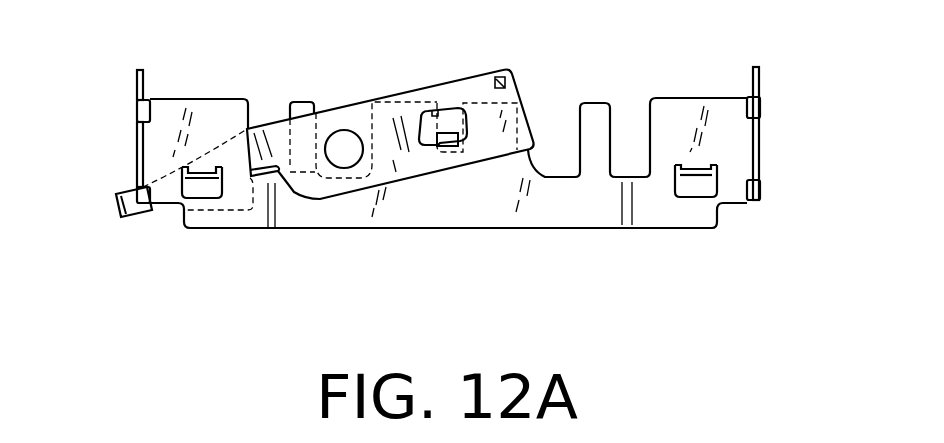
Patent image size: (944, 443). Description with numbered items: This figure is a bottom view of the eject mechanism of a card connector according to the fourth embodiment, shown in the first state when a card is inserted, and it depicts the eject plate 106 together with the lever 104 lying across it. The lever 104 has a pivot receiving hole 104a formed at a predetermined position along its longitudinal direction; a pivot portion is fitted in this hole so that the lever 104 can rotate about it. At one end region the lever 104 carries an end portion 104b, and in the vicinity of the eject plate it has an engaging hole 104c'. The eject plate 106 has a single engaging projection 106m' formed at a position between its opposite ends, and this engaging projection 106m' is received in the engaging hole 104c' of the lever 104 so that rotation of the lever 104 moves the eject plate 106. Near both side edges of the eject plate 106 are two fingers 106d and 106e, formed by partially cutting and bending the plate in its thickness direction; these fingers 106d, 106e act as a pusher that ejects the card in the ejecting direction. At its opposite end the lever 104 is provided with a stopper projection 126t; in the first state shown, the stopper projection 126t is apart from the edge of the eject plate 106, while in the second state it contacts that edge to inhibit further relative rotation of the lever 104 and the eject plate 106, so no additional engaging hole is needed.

The lever 104 is at (360, 103).
The pivot receiving hole 104a is at (337, 147).
The tab 104b is at (118, 206).
The engaging hole 104c' is at (437, 84).
The eject plate 106 is at (545, 230).
The finger 106d is at (203, 180).
The finger 106e is at (693, 177).
The engaging projection 106m' is at (446, 212).
The stopper projection 126t is at (507, 72).